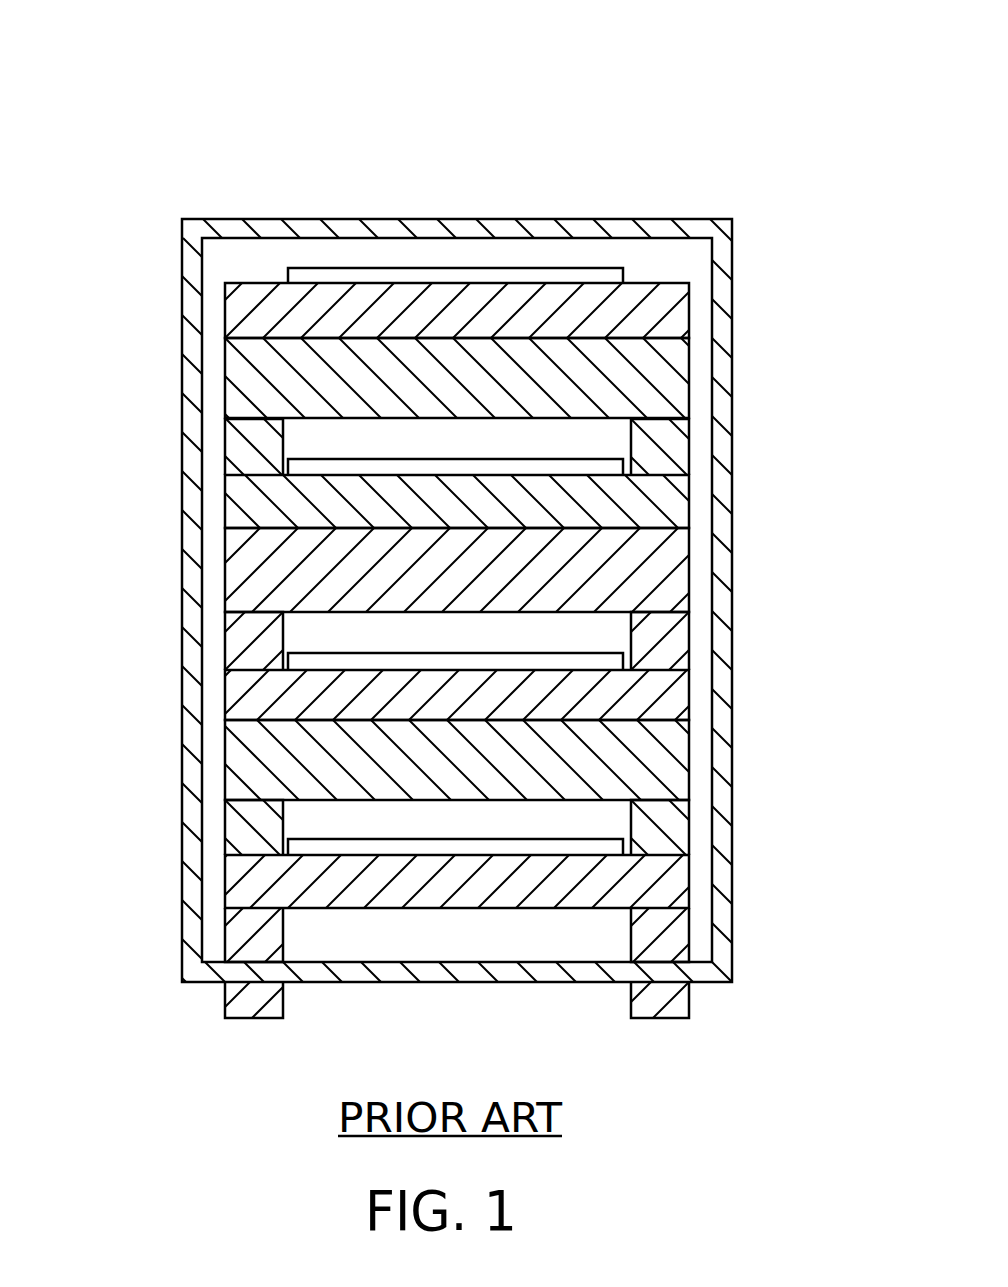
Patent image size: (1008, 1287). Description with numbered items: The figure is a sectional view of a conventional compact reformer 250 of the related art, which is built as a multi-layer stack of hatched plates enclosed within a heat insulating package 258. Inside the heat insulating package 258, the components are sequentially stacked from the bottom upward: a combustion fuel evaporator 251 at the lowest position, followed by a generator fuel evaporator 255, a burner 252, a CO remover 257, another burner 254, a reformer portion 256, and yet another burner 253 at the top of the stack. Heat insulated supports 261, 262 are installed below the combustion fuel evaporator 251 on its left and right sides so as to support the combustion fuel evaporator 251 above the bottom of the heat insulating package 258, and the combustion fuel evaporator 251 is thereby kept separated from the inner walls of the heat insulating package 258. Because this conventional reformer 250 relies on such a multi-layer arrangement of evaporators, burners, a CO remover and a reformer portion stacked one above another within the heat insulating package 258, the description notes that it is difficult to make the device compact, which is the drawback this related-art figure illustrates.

The compact reformer 250 is at (576, 156).
The combustion fuel evaporator 251 is at (242, 878).
The burner 252 is at (248, 698).
The burner 253 is at (240, 307).
The burner 254 is at (242, 500).
The generator fuel evaporator 255 is at (243, 767).
The reformer portion 256 is at (234, 380).
The CO remover 257 is at (242, 572).
The heat insulating package 258 is at (722, 265).
The heat insulated support 261 is at (240, 940).
The heat insulated support 262 is at (667, 938).